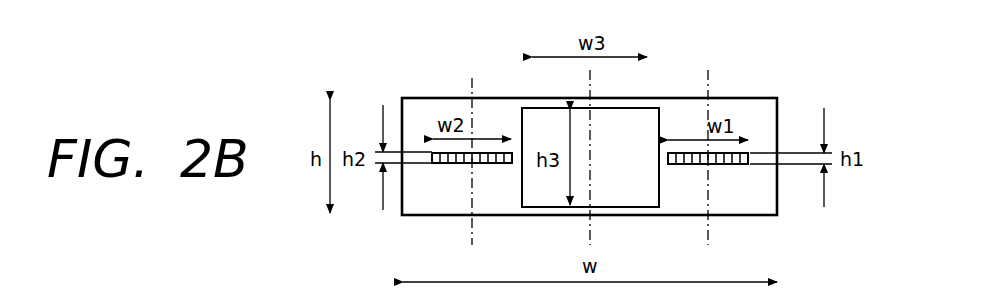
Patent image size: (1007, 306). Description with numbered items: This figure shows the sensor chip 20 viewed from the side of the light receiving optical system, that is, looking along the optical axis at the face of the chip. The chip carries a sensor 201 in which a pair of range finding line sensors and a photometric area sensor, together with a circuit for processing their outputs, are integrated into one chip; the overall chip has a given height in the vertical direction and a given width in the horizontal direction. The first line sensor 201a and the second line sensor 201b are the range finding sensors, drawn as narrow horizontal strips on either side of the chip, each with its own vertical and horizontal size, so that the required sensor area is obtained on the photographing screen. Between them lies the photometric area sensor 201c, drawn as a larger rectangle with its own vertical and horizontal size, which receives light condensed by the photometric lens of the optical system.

The sensor chip 20 is at (742, 216).
The sensor 201 is at (307, 102).
The first line sensor 201a is at (750, 150).
The second line sensor 201b is at (432, 150).
The photometric area sensor 201c is at (627, 108).